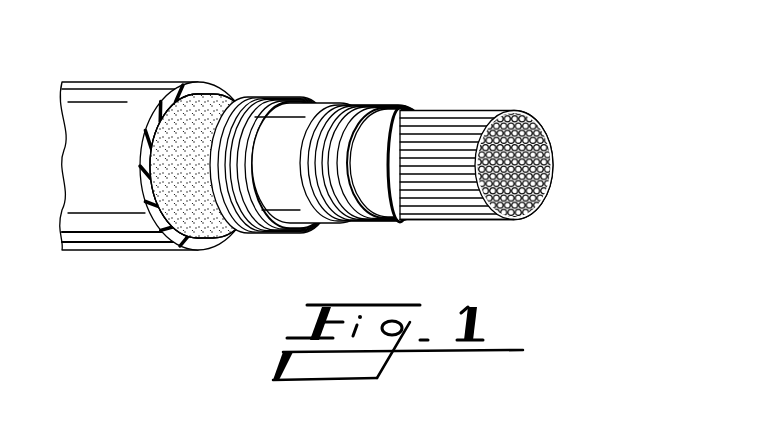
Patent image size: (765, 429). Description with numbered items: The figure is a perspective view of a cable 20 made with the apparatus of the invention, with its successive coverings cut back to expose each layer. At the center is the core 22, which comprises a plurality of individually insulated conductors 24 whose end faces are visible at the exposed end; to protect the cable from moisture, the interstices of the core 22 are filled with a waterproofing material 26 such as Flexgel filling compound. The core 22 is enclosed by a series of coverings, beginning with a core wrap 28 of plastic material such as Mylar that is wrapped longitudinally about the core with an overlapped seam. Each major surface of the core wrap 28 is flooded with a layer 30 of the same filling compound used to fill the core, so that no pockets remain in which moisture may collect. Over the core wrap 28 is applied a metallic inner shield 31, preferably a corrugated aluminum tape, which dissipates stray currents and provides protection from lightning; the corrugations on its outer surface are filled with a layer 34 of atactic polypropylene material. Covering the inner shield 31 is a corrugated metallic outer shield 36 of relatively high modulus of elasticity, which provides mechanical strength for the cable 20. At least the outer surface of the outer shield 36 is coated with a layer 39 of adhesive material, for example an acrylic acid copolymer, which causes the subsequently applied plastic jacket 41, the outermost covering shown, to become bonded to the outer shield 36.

The cable 20 is at (348, 178).
The core 22 is at (518, 150).
The individually insulated conductors 24 is at (480, 120).
The waterproofing material 26 is at (438, 222).
The core wrap 28 is at (440, 118).
The layer of filling compound 30 is at (403, 110).
The metallic inner shield 31 is at (362, 110).
The layer of atactic polypropylene material 34 is at (302, 118).
The metallic outer shield 36 is at (257, 100).
The layer of adhesive material 39 is at (237, 95).
The jacket 41 is at (93, 93).